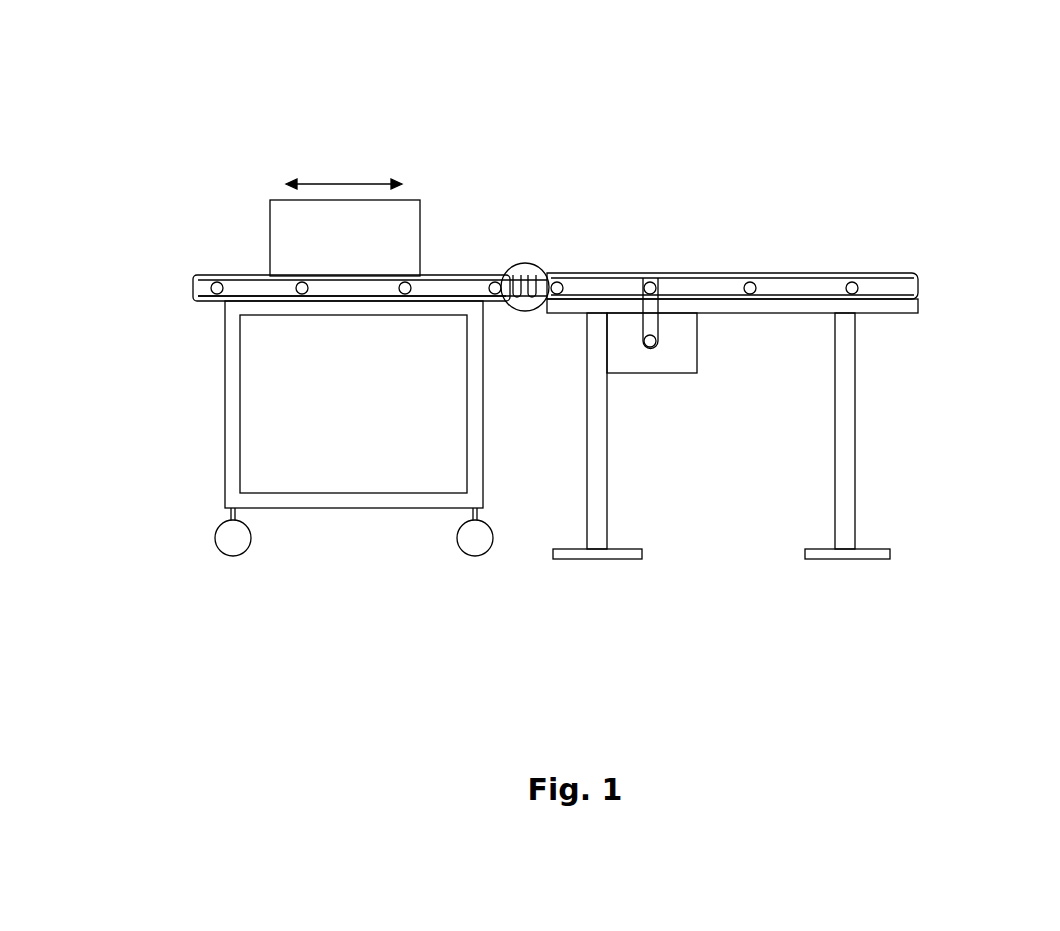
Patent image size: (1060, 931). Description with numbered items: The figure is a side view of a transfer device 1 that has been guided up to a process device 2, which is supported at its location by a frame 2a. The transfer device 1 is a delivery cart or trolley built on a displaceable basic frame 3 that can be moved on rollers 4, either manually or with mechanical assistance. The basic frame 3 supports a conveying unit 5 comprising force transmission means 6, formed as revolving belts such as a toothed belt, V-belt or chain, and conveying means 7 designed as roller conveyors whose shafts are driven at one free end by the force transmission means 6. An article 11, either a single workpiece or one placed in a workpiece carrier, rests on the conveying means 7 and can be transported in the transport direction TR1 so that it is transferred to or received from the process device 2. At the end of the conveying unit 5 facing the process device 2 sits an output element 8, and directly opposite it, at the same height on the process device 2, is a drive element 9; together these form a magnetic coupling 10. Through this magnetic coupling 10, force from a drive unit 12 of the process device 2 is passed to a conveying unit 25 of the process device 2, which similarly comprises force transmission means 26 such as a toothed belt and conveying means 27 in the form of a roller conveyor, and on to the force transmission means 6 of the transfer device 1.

The transfer device 1 is at (312, 122).
The process device 2 is at (731, 152).
The frame 2a is at (847, 440).
The basic frame 3 is at (225, 387).
The rollers 4 is at (247, 553).
The conveying unit 5 is at (170, 285).
The force transmission means 6 is at (237, 278).
The conveying means 7 is at (410, 289).
The output element 8 is at (518, 275).
The drive element 9 is at (524, 311).
The magnetic coupling 10 is at (522, 380).
The article 11 is at (329, 253).
The drive unit 12 is at (657, 373).
The conveying unit 25 is at (938, 300).
The force transmission means 26 is at (713, 288).
The conveying means 27 is at (852, 274).
The transport direction TR1 is at (348, 184).